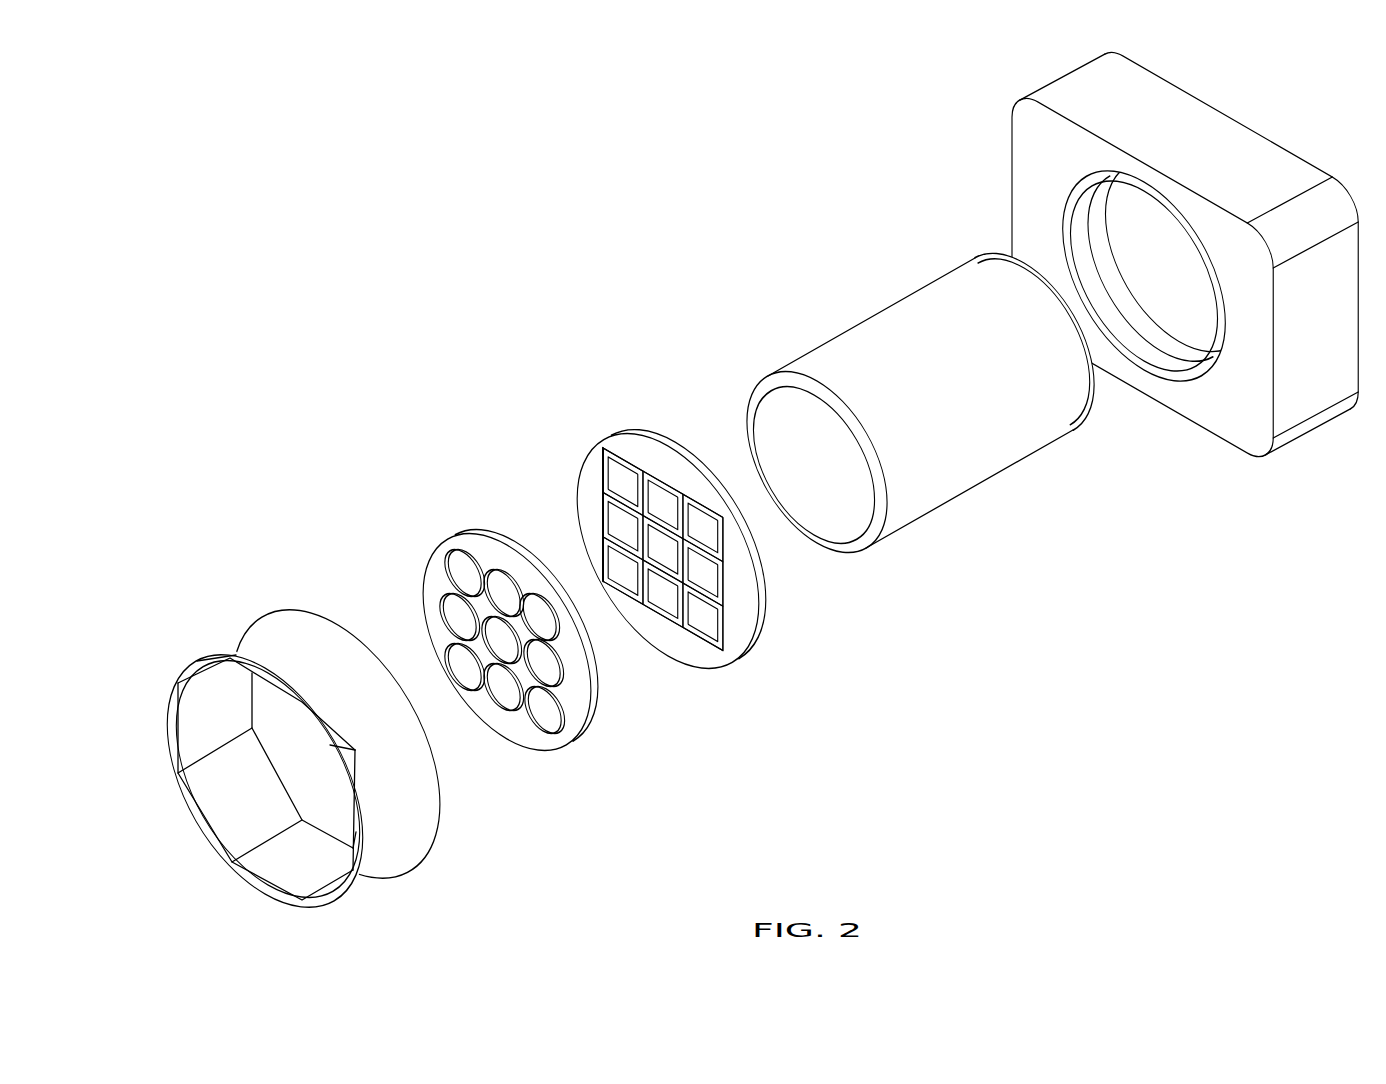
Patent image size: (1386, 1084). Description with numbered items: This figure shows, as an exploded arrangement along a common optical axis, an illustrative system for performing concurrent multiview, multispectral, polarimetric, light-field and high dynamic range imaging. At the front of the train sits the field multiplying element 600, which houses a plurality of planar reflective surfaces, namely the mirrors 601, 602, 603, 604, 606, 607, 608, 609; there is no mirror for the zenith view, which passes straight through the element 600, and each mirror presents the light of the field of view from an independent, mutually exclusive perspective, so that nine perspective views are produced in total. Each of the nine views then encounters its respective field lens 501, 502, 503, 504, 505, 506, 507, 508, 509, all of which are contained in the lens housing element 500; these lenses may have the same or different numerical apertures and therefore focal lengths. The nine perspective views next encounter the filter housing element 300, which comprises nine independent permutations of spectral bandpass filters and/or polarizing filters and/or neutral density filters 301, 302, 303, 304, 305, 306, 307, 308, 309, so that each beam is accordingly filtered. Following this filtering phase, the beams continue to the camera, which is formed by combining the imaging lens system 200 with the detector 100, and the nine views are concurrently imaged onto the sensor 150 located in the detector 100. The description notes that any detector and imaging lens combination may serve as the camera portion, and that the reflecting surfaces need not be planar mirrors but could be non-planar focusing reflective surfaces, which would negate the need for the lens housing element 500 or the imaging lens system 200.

The detector 100 is at (1097, 97).
The sensor 150 is at (1160, 275).
The imaging lens system 200 is at (950, 308).
The filter housing element 300 is at (648, 445).
The filter 301 is at (630, 480).
The filter 302 is at (667, 512).
The filter 303 is at (712, 535).
The filter 304 is at (627, 528).
The filter 305 is at (660, 549).
The filter 306 is at (703, 577).
The filter 307 is at (627, 583).
The filter 308 is at (668, 603).
The filter 309 is at (723, 643).
The lens housing element 500 is at (498, 537).
The field lens 501 is at (462, 568).
The field lens 502 is at (497, 588).
The field lens 503 is at (593, 663).
The field lens 504 is at (455, 612).
The field lens 505 is at (558, 742).
The field lens 506 is at (552, 680).
The field lens 507 is at (458, 662).
The field lens 508 is at (505, 698).
The field lens 509 is at (540, 720).
The field multiplying element 600 is at (289, 614).
The mirror 601 is at (205, 670).
The mirror 602 is at (265, 677).
The mirror 603 is at (340, 747).
The mirror 604 is at (200, 715).
The mirror 606 is at (362, 830).
The mirror 607 is at (235, 802).
The mirror 608 is at (300, 867).
The mirror 609 is at (330, 888).